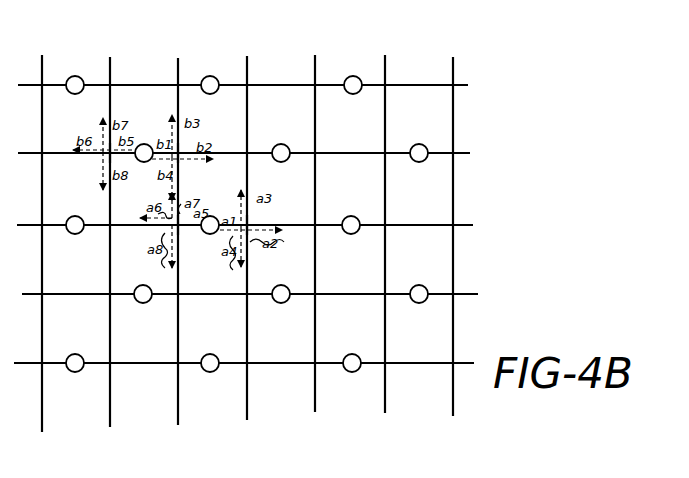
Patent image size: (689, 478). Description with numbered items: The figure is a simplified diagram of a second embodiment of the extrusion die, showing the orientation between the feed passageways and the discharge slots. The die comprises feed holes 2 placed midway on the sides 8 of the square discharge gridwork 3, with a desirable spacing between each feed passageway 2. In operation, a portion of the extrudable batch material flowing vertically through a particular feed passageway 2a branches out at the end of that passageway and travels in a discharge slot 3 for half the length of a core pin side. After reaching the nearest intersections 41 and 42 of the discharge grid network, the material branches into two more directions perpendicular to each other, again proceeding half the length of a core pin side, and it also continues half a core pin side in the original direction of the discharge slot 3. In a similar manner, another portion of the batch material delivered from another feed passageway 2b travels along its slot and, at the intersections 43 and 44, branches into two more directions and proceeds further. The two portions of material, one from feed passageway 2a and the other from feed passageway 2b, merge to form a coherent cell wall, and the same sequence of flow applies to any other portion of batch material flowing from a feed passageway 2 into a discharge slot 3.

The feed passageway 2 is at (353, 76).
The feed passageway 2a is at (211, 234).
The feed passageway 2b is at (144, 144).
The discharge slot 3 is at (362, 157).
The side 8 is at (290, 150).
The intersection 41 is at (247, 225).
The intersection 42 is at (181, 227).
The intersection 43 is at (178, 153).
The intersection 44 is at (110, 152).